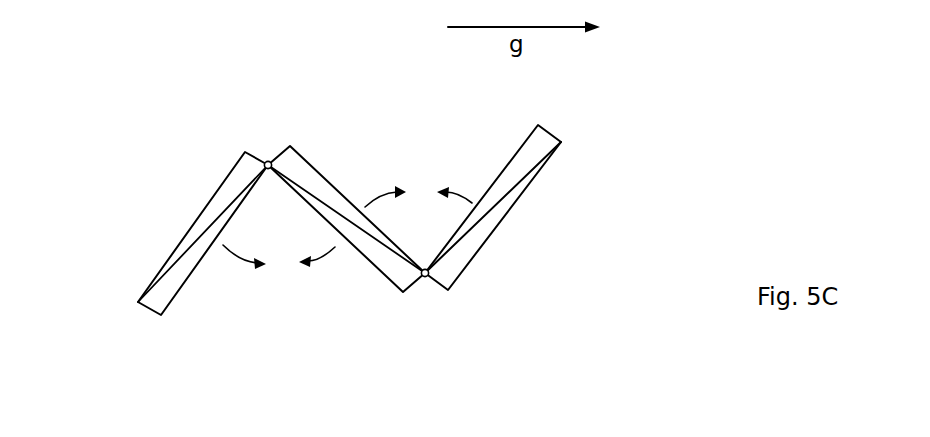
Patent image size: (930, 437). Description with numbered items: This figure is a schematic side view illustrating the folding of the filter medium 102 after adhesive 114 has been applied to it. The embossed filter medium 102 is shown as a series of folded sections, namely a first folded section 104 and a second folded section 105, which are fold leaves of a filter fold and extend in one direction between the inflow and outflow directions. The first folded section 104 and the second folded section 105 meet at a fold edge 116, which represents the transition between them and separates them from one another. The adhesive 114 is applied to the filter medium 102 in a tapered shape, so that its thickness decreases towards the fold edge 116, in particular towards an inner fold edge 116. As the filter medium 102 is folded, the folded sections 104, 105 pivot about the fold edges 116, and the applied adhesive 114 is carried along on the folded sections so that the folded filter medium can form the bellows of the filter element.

The filter medium 102 is at (149, 135).
The first folded section 104 is at (210, 219).
The second folded section 105 is at (315, 190).
The adhesive 114 is at (243, 176).
The fold edge 116 is at (270, 161).